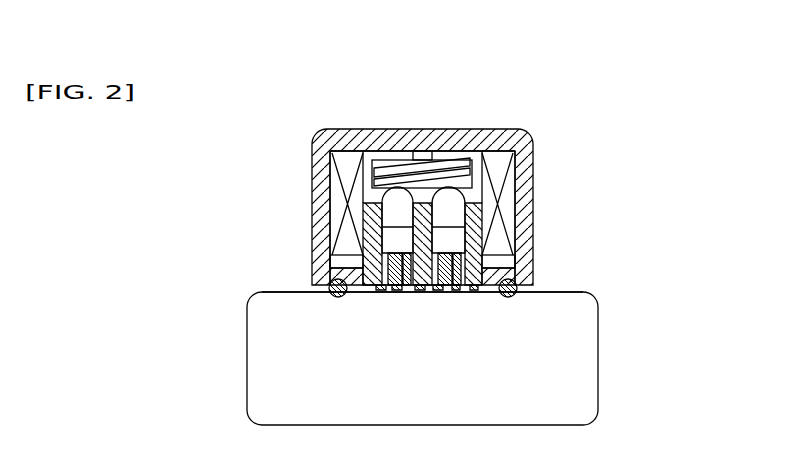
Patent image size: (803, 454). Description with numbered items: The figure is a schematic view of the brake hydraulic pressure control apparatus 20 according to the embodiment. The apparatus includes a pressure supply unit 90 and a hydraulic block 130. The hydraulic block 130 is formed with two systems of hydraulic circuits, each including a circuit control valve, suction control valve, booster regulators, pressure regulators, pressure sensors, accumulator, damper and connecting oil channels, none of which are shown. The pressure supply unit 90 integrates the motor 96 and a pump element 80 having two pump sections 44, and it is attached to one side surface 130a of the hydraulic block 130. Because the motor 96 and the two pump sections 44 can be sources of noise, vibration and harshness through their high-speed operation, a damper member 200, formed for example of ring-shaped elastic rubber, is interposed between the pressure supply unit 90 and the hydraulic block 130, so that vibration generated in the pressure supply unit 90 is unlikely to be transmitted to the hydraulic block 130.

The brake hydraulic pressure control apparatus 20 is at (692, 398).
The pump sections 44 is at (392, 208).
The pump element 80 is at (353, 248).
The pressure supply unit 90 is at (551, 144).
The motor 96 is at (322, 172).
The hydraulic block 130 is at (607, 306).
The side surface 130a is at (546, 292).
The damper member 200 is at (313, 282).